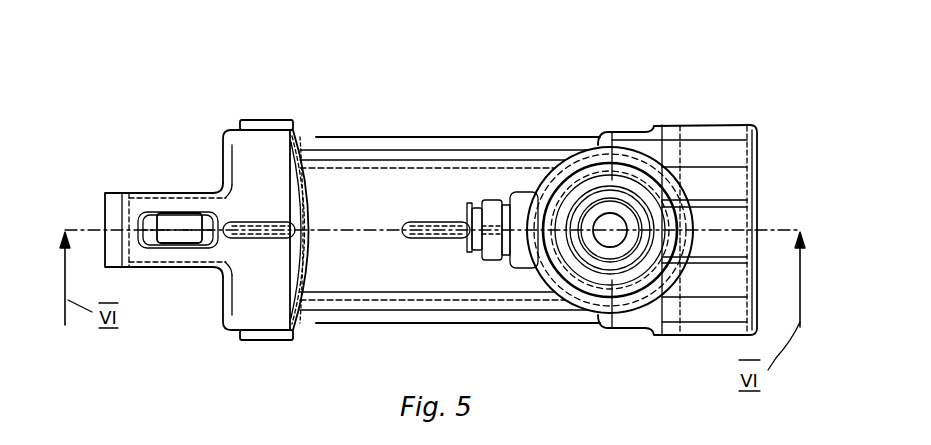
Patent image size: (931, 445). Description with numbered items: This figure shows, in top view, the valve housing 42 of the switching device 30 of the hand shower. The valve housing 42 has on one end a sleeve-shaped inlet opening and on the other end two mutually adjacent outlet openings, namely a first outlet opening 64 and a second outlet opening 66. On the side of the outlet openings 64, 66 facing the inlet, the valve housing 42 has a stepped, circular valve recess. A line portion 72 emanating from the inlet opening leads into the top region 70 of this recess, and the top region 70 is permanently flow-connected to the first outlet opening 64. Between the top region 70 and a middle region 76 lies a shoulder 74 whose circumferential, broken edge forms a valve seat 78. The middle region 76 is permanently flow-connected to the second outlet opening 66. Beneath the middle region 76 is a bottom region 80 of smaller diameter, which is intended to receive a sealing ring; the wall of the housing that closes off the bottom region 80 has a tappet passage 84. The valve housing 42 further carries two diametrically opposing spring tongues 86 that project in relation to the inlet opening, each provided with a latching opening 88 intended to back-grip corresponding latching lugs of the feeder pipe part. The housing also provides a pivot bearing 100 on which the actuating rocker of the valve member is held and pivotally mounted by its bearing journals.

The switching device 30 is at (347, 98).
The valve housing 42 is at (357, 315).
The first outlet opening 64 is at (735, 283).
The second outlet opening 66 is at (725, 160).
The top region 70 is at (565, 307).
The line portion 72 is at (415, 195).
The shoulder 74 is at (557, 162).
The middle region 76 is at (597, 268).
The valve seat 78 is at (580, 180).
The bottom region 80 is at (617, 207).
The tappet passage 84 is at (612, 248).
The spring tongues 86 is at (170, 255).
The latching opening 88 is at (183, 222).
The pivot bearing 100 is at (466, 252).